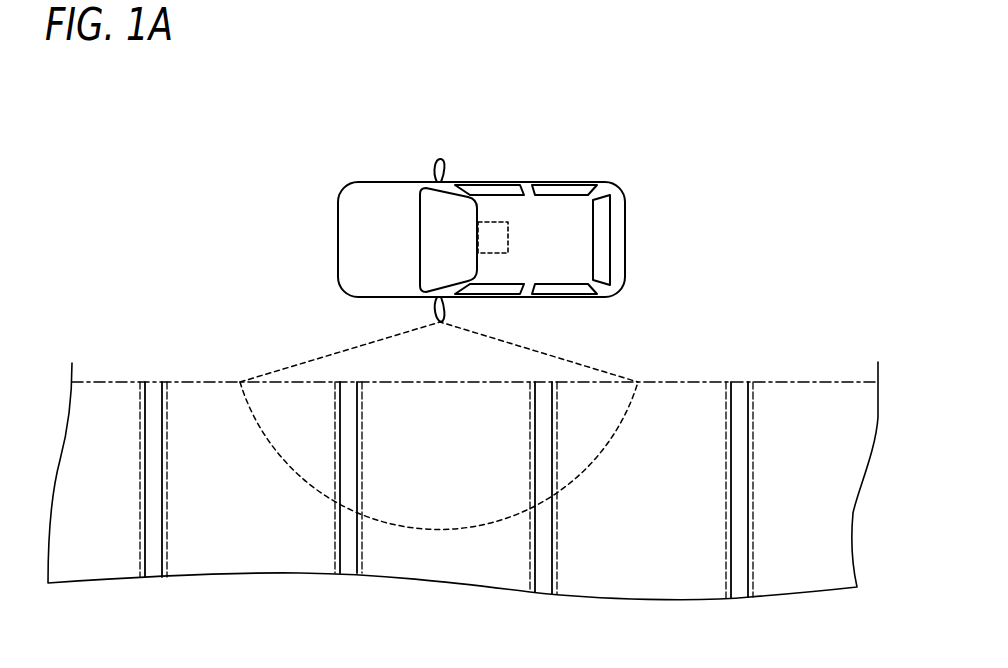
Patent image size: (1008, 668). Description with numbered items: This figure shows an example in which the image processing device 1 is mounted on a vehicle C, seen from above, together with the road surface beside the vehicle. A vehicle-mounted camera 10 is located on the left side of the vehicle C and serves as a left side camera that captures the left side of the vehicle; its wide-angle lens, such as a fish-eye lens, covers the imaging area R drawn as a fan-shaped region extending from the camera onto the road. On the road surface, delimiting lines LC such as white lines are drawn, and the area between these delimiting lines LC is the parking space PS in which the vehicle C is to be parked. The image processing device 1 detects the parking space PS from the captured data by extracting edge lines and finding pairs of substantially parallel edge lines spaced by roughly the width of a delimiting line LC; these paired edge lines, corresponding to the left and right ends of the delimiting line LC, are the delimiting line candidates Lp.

The image processing device 1 is at (503, 221).
The vehicle-mounted camera 10 is at (436, 307).
The vehicle C is at (606, 182).
The imaging area R is at (628, 378).
The parking space PS is at (392, 382).
The delimiting line candidates Lp is at (340, 518).
The delimiting line LC is at (352, 545).